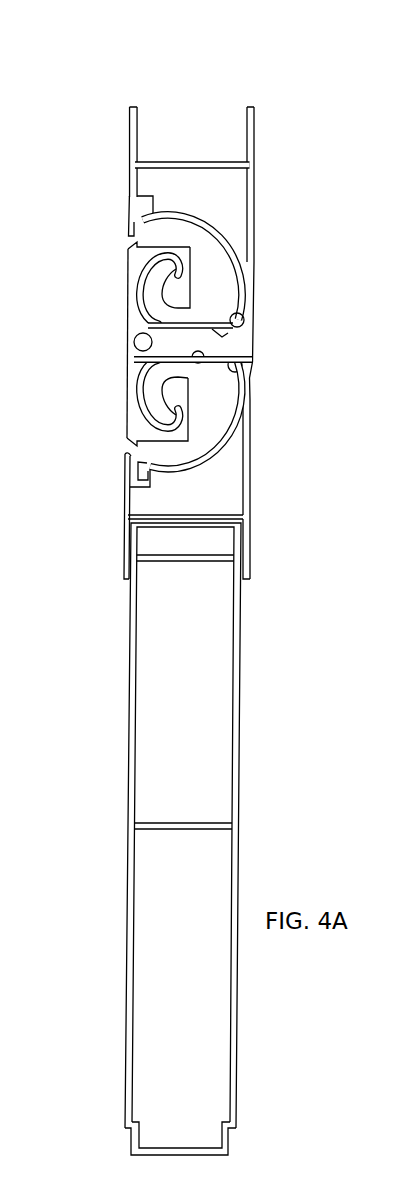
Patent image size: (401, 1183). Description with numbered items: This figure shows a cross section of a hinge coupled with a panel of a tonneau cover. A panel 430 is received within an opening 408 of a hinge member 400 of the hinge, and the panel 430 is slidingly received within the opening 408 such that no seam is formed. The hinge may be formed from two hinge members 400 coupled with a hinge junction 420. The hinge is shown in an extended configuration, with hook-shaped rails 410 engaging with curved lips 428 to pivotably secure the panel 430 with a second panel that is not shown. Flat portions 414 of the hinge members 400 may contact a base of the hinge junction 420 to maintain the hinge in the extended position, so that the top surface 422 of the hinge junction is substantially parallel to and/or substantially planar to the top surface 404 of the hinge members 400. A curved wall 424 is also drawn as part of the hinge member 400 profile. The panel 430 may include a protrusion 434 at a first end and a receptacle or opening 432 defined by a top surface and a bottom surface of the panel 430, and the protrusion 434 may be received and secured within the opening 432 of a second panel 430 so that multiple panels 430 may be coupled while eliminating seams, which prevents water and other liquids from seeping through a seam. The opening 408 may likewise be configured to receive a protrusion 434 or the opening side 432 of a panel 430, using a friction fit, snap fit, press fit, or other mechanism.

The hinge member 400 is at (253, 385).
The top surface of the hinge members 404 is at (127, 158).
The opening 408 is at (177, 137).
The hook-shaped rail 410 is at (150, 380).
The flat portion 414 is at (247, 327).
The hinge junction 420 is at (133, 328).
The top surface of hinge junction 422 is at (137, 293).
The curved wall 424 is at (252, 288).
The curved lip 428 is at (207, 354).
The panel 430 is at (186, 757).
The opening 432 is at (130, 507).
The protrusion 434 is at (140, 1053).